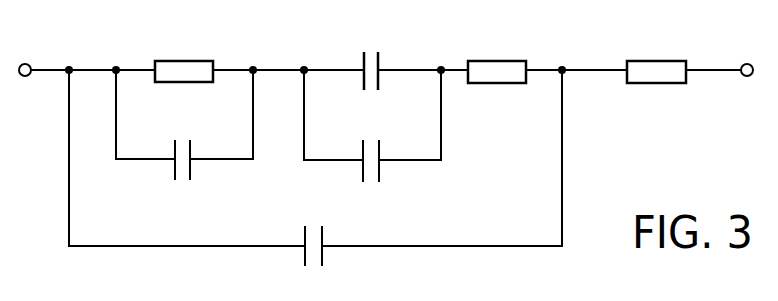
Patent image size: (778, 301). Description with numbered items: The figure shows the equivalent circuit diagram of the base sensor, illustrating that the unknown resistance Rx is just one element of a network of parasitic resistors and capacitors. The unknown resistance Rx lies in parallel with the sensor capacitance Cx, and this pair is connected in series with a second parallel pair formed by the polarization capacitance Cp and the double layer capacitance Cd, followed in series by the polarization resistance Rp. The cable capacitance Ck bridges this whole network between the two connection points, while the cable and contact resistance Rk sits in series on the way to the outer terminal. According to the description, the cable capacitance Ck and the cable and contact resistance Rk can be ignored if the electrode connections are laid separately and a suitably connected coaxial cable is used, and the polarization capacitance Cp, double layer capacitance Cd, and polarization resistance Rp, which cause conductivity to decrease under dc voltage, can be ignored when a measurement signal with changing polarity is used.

The unknown resistance Rx is at (184, 55).
The sensor capacitance Cx is at (184, 125).
The polarization capacitance Cp is at (369, 52).
The double layer capacitance Cd is at (372, 126).
The polarization resistance Rp is at (497, 49).
The cable and contact resistance Rk is at (656, 49).
The cable capacitance Ck is at (315, 168).